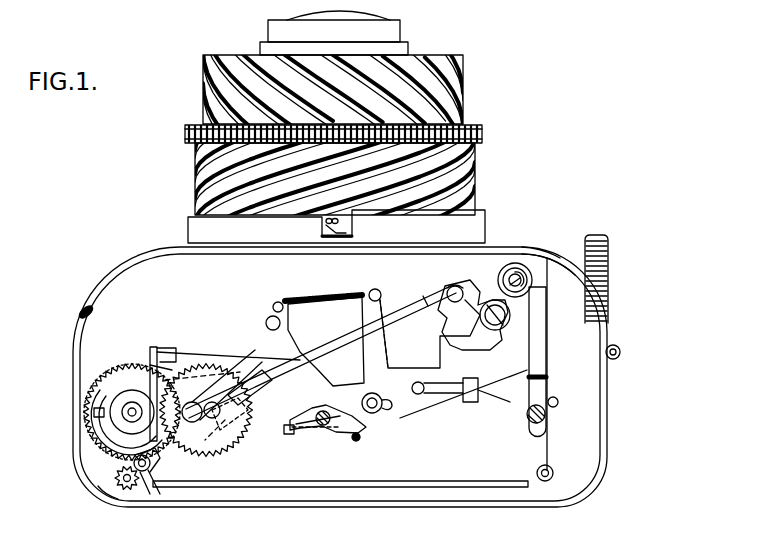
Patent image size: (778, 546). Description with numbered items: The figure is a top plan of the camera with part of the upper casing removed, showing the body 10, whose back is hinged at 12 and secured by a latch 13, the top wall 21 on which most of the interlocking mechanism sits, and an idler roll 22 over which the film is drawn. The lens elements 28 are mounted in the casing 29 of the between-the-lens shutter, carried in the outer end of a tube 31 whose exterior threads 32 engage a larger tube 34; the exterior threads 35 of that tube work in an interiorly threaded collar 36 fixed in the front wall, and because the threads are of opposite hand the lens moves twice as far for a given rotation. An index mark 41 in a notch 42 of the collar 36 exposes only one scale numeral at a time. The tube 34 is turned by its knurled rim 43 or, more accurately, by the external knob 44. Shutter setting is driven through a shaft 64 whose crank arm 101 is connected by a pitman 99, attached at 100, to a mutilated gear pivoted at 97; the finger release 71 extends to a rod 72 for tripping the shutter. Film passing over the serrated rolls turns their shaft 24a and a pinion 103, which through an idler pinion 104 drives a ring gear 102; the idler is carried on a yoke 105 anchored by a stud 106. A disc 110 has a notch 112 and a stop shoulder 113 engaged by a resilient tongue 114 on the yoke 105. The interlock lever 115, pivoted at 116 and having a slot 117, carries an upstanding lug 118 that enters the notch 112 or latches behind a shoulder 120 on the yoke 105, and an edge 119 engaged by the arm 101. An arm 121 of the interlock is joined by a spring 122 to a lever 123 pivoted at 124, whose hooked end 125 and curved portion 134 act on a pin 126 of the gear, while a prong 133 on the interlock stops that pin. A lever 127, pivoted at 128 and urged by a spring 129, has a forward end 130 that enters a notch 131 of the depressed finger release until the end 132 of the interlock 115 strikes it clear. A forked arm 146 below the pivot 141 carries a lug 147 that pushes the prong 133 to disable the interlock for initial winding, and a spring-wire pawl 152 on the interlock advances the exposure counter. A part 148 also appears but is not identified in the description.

The camera body 10 is at (153, 252).
The hinge 12 is at (619, 356).
The latch 13 is at (80, 308).
The top wall 21 is at (450, 488).
The idler roll 22 is at (547, 482).
The shaft 24a is at (105, 495).
The lens elements 28 is at (286, 19).
The shutter casing 29 is at (462, 56).
The inner tube 31 is at (464, 107).
The multiple threads 32 is at (465, 80).
The outer tube 34 is at (476, 188).
The exterior threads 35 is at (476, 160).
The threaded collar 36 is at (188, 220).
The index mark 41 is at (326, 237).
The notch 42 is at (350, 228).
The knurled rim 43 is at (185, 134).
The external knob 44 is at (608, 258).
The shaft 64 is at (508, 278).
The finger release 71 is at (520, 277).
The rod 72 is at (515, 270).
The pivot 97 is at (215, 378).
The pitman 99 is at (334, 346).
The attachment point 100 is at (196, 438).
The crank arm 101 is at (455, 286).
The ring gear 102 is at (90, 432).
The pinion 103 is at (127, 490).
The idler pinion 104 is at (147, 480).
The yoke 105 is at (150, 466).
The stud 106 is at (165, 494).
The disc 110 is at (96, 392).
The notch 112 is at (148, 358).
The stop shoulder 113 is at (94, 410).
The tongue 114 is at (96, 430).
The interlock lever 115 is at (228, 380).
The pivot 116 is at (374, 414).
The slot 117 is at (406, 420).
The upstanding lug 118 is at (158, 347).
The forwardly-projecting edge 119 is at (440, 346).
The shoulder 120 is at (150, 366).
The arm 121 is at (380, 292).
The spring 122 is at (345, 295).
The lever 123 is at (274, 306).
The pivot 124 is at (266, 325).
The hooked end 125 is at (218, 448).
The pin 126 is at (195, 400).
The lever 127 is at (547, 368).
The pivot 128 is at (545, 425).
The spring 129 is at (558, 405).
The forward end 130 is at (553, 280).
The notch 131 is at (540, 272).
The end 132 is at (507, 334).
The prong 133 is at (292, 434).
The curved portion 134 is at (282, 434).
The pivot 141 is at (332, 396).
The forked arm 146 is at (330, 432).
The lug 147 is at (325, 428).
The pin 148 is at (360, 441).
The pawl 152 is at (470, 404).